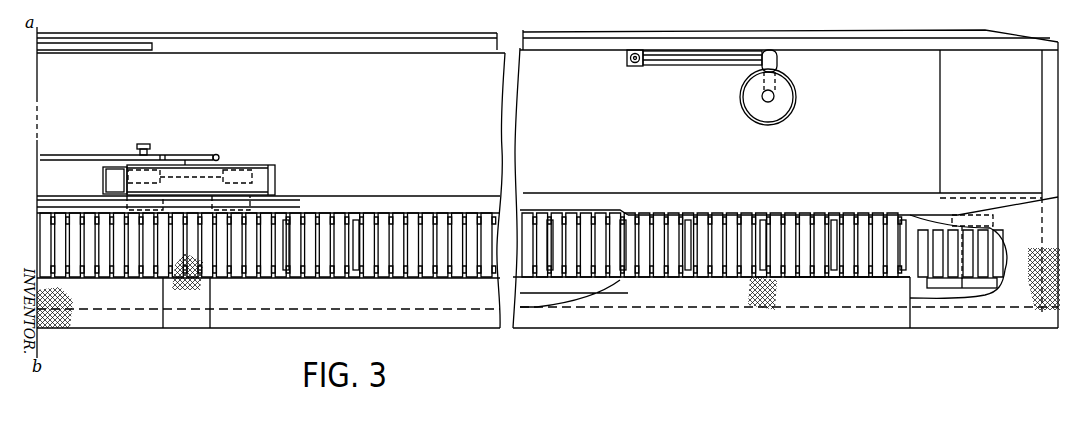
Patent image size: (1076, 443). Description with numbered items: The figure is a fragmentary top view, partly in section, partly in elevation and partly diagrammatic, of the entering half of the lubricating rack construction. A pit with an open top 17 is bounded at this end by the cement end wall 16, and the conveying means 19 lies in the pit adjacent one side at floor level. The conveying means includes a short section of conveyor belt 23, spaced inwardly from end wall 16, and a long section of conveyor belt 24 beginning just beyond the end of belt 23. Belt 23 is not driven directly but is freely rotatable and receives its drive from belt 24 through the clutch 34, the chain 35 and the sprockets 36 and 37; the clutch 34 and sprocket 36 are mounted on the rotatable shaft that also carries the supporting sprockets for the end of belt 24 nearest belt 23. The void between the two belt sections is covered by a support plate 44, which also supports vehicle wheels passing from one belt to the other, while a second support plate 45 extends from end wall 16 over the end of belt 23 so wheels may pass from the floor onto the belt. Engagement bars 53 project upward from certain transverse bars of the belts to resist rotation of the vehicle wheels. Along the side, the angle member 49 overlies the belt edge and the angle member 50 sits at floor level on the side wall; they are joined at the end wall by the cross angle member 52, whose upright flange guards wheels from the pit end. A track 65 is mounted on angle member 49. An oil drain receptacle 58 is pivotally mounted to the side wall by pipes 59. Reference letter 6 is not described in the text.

The flange 6 is at (42, 54).
The cement end wall 16 is at (1033, 310).
The open top 17 is at (527, 98).
The conveying means 19 is at (678, 282).
The short section of conveyor belt 23 is at (673, 210).
The long section of conveyor belt 24 is at (388, 210).
The clutch 34 is at (150, 158).
The chain 35 is at (190, 180).
The sprocket 36 is at (118, 178).
The sprocket 37 is at (236, 170).
The support plate 44 is at (200, 304).
The second support plate 45 is at (982, 310).
The angle member 49 is at (862, 212).
The angle member 50 is at (812, 30).
The cross angle member 52 is at (1048, 62).
The engagement bars 53 is at (693, 273).
The oil drain receptacle 58 is at (793, 88).
The pipes 59 is at (718, 60).
The track 65 is at (50, 205).